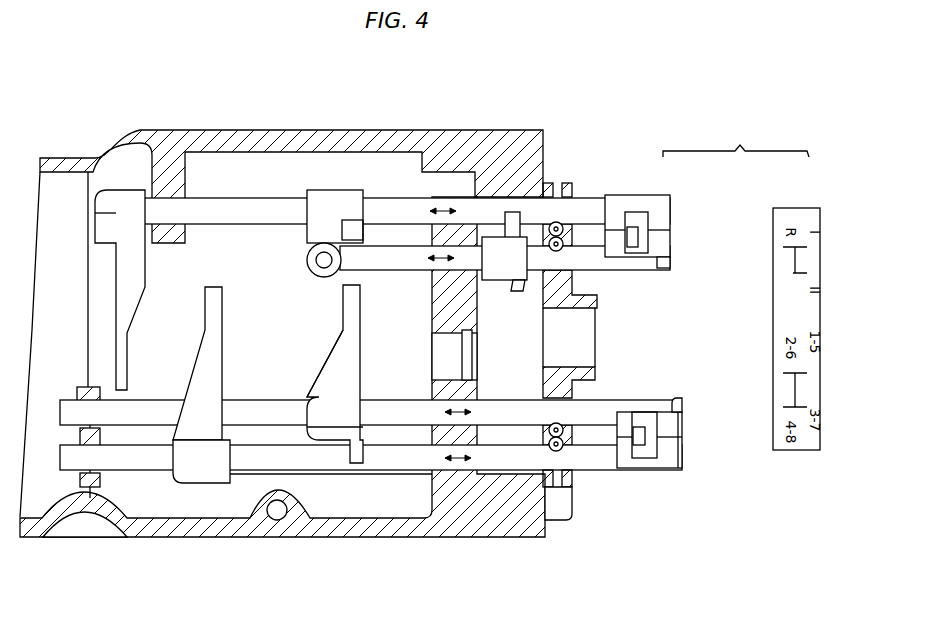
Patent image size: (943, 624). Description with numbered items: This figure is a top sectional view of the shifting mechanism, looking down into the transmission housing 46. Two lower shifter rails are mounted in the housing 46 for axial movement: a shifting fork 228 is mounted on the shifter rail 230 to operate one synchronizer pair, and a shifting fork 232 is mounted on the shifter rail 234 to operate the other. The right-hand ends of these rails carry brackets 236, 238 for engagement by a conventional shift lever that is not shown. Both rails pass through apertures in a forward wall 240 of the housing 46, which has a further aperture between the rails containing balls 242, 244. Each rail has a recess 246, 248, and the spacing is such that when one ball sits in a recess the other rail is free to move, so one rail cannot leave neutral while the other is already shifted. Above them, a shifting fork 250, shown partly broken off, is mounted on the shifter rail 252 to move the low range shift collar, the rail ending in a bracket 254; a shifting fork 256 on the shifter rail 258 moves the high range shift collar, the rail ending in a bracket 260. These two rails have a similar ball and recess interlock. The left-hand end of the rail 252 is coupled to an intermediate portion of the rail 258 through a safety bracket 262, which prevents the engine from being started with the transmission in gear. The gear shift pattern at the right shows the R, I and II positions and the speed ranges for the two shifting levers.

The transmission housing 46 is at (470, 540).
The shifting fork 228 is at (345, 312).
The shifter rail 230 is at (391, 405).
The shifting fork 232 is at (222, 342).
The shifter rail 234 is at (257, 452).
The bracket 236 is at (668, 412).
The bracket 238 is at (678, 468).
The forward wall 240 is at (566, 505).
The ball 242 is at (551, 424).
The ball 244 is at (540, 462).
The recess 246 is at (561, 440).
The recess 248 is at (565, 454).
The shifting fork 250 is at (505, 285).
The shifter rail 252 is at (606, 272).
The bracket 254 is at (658, 254).
The shifting fork 256 is at (128, 356).
The shifter rail 258 is at (228, 216).
The bracket 260 is at (636, 200).
The safety bracket 262 is at (333, 198).